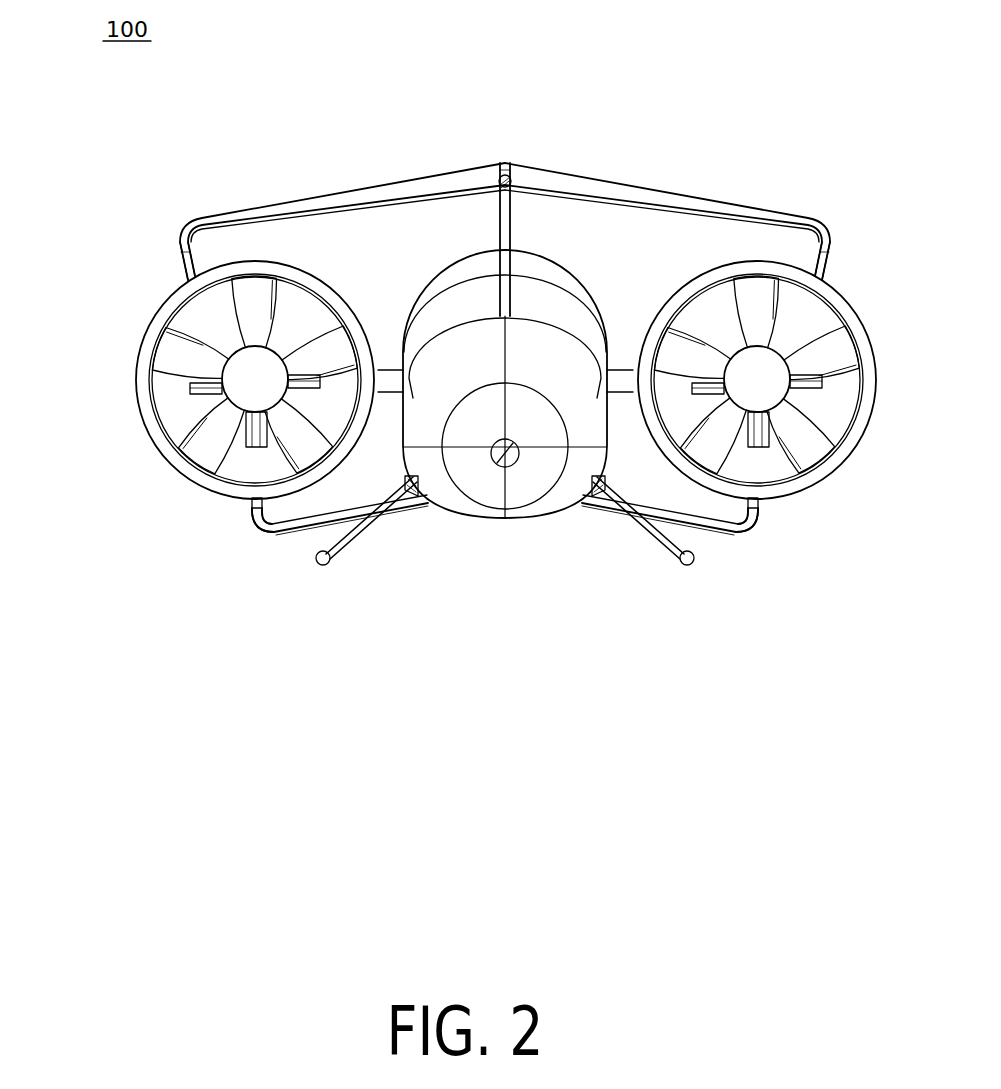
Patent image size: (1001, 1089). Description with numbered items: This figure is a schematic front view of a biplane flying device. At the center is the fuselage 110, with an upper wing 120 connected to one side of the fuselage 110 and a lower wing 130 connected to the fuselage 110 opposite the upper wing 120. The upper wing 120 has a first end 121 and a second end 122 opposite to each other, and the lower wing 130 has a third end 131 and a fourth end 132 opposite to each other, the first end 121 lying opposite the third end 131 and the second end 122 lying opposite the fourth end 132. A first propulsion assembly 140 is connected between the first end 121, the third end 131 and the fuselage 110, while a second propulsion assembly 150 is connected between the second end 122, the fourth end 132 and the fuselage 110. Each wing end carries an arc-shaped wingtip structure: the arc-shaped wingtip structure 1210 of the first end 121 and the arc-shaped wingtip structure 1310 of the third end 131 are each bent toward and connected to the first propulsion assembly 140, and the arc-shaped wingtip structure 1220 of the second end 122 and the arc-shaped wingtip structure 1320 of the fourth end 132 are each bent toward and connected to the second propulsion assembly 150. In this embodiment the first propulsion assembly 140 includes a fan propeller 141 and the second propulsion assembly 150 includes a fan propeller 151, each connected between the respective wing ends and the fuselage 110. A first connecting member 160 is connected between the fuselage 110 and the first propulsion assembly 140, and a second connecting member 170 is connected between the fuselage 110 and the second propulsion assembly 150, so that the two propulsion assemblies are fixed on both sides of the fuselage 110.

The fuselage 110 is at (569, 478).
The upper wing 120 is at (504, 178).
The first end 121 is at (703, 198).
The second end 122 is at (306, 198).
The arc-shaped wingtip structure 1210 is at (833, 236).
The arc-shaped wingtip structure 1220 is at (177, 236).
The lower wing 130 is at (378, 504).
The third end 131 is at (703, 551).
The fourth end 132 is at (306, 551).
The arc-shaped wingtip structure 1310 is at (747, 531).
The arc-shaped wingtip structure 1320 is at (263, 531).
The first propulsion assembly 140 is at (802, 468).
The fan propeller 141 is at (792, 398).
The second propulsion assembly 150 is at (148, 413).
The fan propeller 151 is at (199, 380).
The first connecting member 160 is at (620, 372).
The second connecting member 170 is at (390, 372).